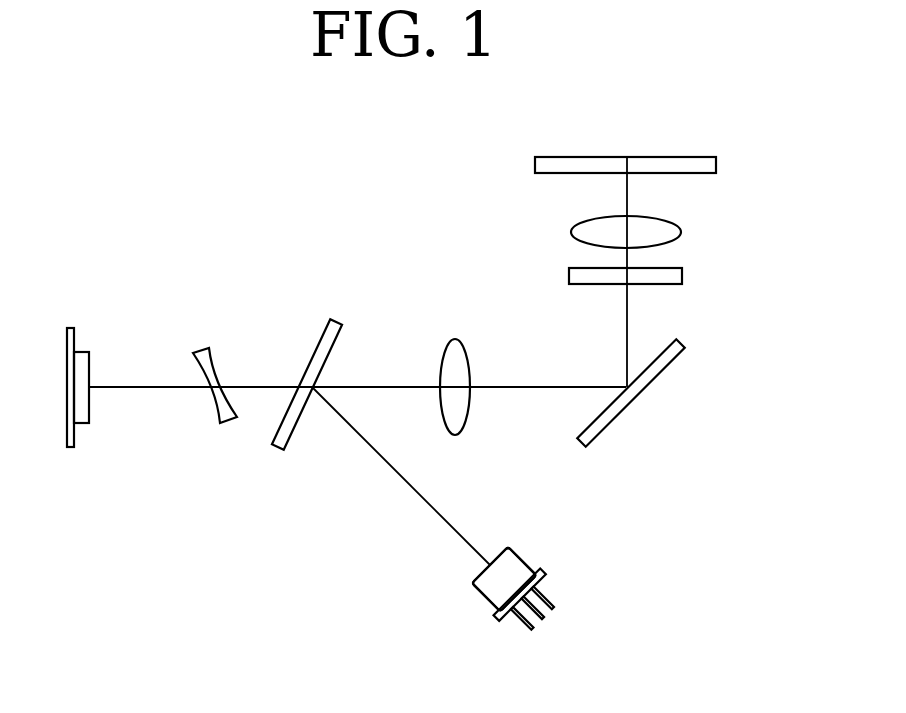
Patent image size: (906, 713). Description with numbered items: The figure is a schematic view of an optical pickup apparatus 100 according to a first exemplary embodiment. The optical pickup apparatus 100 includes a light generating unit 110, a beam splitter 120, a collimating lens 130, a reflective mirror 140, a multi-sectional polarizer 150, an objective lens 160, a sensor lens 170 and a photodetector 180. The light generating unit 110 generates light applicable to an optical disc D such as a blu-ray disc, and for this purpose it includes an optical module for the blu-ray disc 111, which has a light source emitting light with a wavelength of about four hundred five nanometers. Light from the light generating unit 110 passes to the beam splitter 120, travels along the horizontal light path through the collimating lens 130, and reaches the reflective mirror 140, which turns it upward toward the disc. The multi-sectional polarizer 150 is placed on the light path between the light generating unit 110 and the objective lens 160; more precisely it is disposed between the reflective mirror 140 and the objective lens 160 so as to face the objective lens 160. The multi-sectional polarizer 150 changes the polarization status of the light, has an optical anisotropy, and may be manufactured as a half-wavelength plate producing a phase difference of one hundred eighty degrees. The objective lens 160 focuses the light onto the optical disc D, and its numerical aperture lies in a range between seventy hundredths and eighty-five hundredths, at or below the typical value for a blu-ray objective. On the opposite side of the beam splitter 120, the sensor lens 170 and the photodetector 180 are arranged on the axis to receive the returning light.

The optical pickup apparatus 100 is at (307, 153).
The light generating unit 110 is at (444, 577).
The optical module for the blu-ray disc 111 is at (483, 597).
The beam splitter 120 is at (337, 318).
The collimating lens 130 is at (455, 338).
The reflective mirror 140 is at (682, 340).
The multi-sectional polarizer 150 is at (682, 276).
The objective lens 160 is at (681, 230).
The sensor lens 170 is at (197, 346).
The photodetector 180 is at (84, 352).
The optical disc D is at (716, 165).